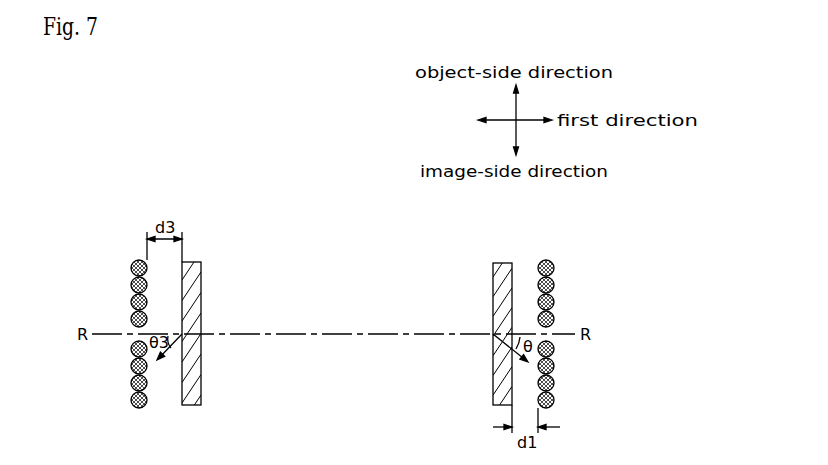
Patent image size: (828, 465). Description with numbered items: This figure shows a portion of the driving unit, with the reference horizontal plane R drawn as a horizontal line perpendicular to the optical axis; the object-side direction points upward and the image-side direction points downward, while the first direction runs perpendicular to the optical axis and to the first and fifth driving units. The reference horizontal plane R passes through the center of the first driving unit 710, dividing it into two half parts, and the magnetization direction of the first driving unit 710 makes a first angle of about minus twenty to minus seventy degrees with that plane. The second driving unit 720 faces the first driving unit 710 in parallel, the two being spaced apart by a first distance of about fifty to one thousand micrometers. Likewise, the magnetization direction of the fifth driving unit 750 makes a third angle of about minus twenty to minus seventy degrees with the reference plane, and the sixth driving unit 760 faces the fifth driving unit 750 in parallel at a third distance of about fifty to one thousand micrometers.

The first driving unit 710 is at (498, 264).
The second driving unit 720 is at (543, 262).
The fifth driving unit 750 is at (200, 287).
The sixth driving unit 760 is at (131, 399).